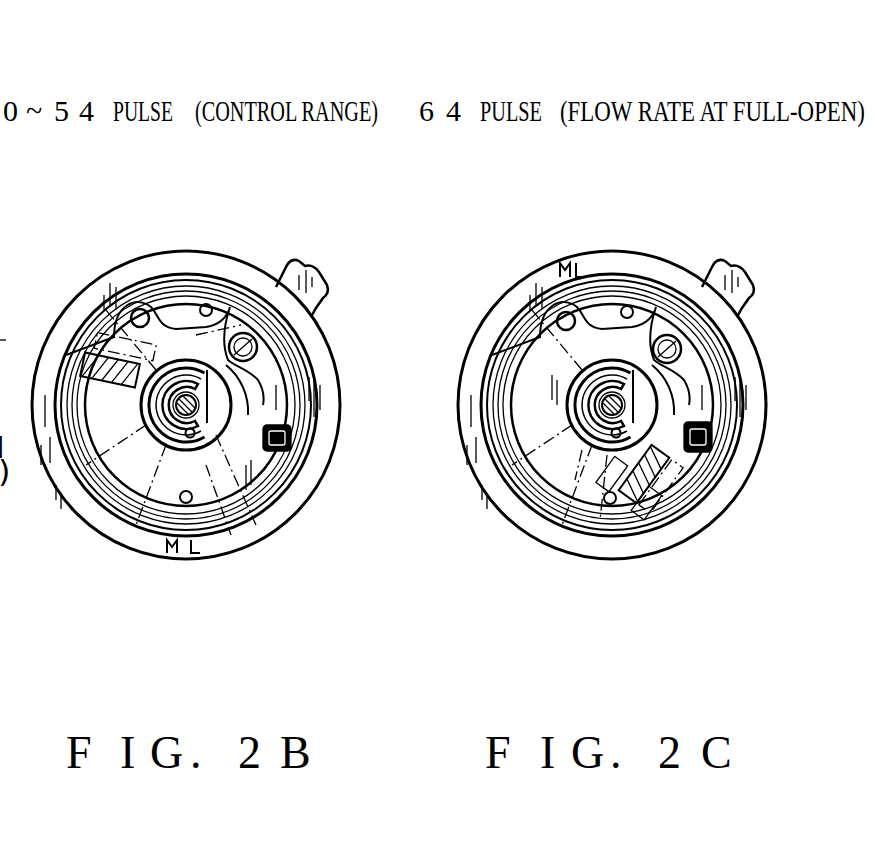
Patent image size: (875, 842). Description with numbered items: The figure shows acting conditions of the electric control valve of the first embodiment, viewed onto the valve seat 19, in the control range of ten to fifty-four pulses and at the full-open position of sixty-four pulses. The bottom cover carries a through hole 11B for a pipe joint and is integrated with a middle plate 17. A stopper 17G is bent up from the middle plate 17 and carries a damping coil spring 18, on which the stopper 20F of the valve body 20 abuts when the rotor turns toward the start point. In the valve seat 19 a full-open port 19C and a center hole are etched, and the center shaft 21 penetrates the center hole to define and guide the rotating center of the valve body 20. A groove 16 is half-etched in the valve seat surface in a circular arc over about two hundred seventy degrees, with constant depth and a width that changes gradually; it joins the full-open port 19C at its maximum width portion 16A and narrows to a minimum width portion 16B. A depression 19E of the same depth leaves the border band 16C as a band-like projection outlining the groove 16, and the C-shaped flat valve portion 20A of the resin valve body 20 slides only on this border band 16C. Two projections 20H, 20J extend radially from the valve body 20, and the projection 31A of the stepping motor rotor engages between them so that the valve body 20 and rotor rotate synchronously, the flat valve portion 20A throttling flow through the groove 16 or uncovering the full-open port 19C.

In FIG. 2B, the through hole 11B is at (221, 405).
In FIG. 2C, the through hole 11B is at (645, 405).
In FIG. 2B, the groove 16 is at (171, 487).
In FIG. 2C, the groove 16 is at (540, 423).
In FIG. 2B, the maximum width portion 16A is at (178, 548).
In FIG. 2C, the maximum width portion 16A is at (581, 517).
In FIG. 2B, the minimum width portion 16B is at (312, 388).
In FIG. 2C, the minimum width portion 16B is at (695, 304).
In FIG. 2B, the border band 16C is at (230, 296).
In FIG. 2C, the border band 16C is at (617, 301).
In FIG. 2B, the middle plate 17 is at (176, 335).
In FIG. 2C, the middle plate 17 is at (602, 349).
In FIG. 2B, the stopper 17G is at (319, 470).
In FIG. 2C, the stopper 17G is at (693, 420).
In FIG. 2B, the damping coil spring 18 is at (204, 438).
In FIG. 2C, the damping coil spring 18 is at (651, 405).
In FIG. 2B, the valve seat 19 is at (160, 425).
In FIG. 2C, the valve seat 19 is at (569, 405).
In FIG. 2B, the full-open port 19C is at (220, 541).
In FIG. 2C, the full-open port 19C is at (723, 408).
In FIG. 2B, the depression 19E is at (298, 533).
In FIG. 2C, the depression 19E is at (745, 391).
In FIG. 2B, the valve body 20 is at (257, 576).
In FIG. 2C, the valve body 20 is at (629, 553).
In FIG. 2B, the flat valve portion 20A is at (287, 269).
In FIG. 2C, the flat valve portion 20A is at (540, 460).
In FIG. 2B, the stopper 20F is at (105, 275).
In FIG. 2C, the stopper 20F is at (703, 576).
In FIG. 2B, the projection 20H is at (101, 277).
In FIG. 2C, the projection 20H is at (680, 548).
In FIG. 2B, the projection 20J is at (118, 553).
In FIG. 2C, the projection 20J is at (707, 528).
In FIG. 2B, the center shaft 21 is at (313, 389).
In FIG. 2C, the center shaft 21 is at (557, 316).
In FIG. 2B, the projection 31A is at (76, 298).
In FIG. 2C, the projection 31A is at (675, 459).